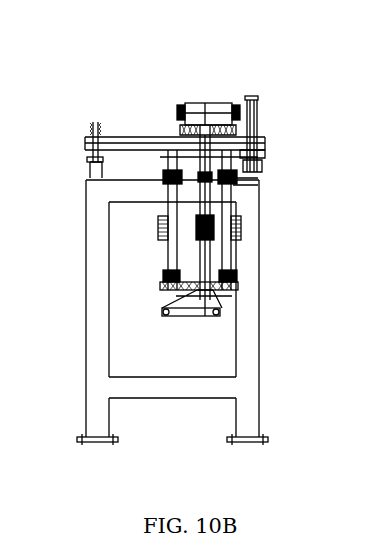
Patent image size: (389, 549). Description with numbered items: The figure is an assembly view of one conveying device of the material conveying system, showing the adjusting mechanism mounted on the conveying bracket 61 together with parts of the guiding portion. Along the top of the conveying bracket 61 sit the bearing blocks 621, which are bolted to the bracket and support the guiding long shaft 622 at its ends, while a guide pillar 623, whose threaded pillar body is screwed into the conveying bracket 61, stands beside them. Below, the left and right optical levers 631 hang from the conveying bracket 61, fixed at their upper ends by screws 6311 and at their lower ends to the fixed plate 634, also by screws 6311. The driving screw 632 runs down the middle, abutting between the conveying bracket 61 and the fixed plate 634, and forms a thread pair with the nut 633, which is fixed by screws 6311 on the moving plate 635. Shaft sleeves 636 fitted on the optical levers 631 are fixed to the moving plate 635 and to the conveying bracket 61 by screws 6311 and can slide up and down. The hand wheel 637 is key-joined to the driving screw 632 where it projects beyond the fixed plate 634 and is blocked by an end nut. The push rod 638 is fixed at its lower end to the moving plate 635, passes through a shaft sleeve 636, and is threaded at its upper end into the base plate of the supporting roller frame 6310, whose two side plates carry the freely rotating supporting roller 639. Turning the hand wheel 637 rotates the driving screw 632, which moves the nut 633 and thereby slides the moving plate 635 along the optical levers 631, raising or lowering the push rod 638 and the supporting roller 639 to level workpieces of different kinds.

The conveying bracket 61 is at (247, 428).
The bearing block 621 is at (262, 141).
The guiding long shaft 622 is at (252, 154).
The guide pillar 623 is at (258, 100).
The optical lever 631 is at (231, 289).
The driving screw 632 is at (198, 246).
The nut 633 is at (158, 226).
The fixed plate 634 is at (221, 298).
The moving plate 635 is at (241, 228).
The shaft sleeve 636 is at (235, 268).
The hand wheel 637 is at (170, 313).
The push rod 638 is at (200, 158).
The supporting roller 639 is at (218, 103).
The supporting roller frame 6310 is at (180, 103).
The screw 6311 is at (233, 180).